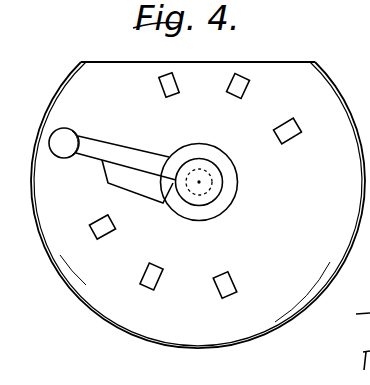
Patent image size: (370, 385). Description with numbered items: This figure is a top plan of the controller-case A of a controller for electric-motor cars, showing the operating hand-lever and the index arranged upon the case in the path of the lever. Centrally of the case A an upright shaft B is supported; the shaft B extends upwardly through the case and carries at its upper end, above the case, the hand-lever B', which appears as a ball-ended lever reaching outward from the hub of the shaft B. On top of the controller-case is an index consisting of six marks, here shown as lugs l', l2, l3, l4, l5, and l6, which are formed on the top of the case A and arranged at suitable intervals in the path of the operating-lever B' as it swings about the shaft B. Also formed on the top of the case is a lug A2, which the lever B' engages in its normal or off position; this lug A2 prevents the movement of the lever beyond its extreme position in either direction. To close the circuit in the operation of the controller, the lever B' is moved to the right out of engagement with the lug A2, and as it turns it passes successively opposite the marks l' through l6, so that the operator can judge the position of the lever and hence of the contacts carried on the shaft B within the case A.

The controller-case A is at (198, 205).
The lug A2 is at (150, 193).
The upright shaft B is at (214, 182).
The hand-lever B' is at (112, 148).
The lug l' is at (169, 95).
The lug l2 is at (237, 96).
The lug l3 is at (288, 140).
The lug l4 is at (225, 297).
The lug l5 is at (151, 290).
The lug l6 is at (102, 237).